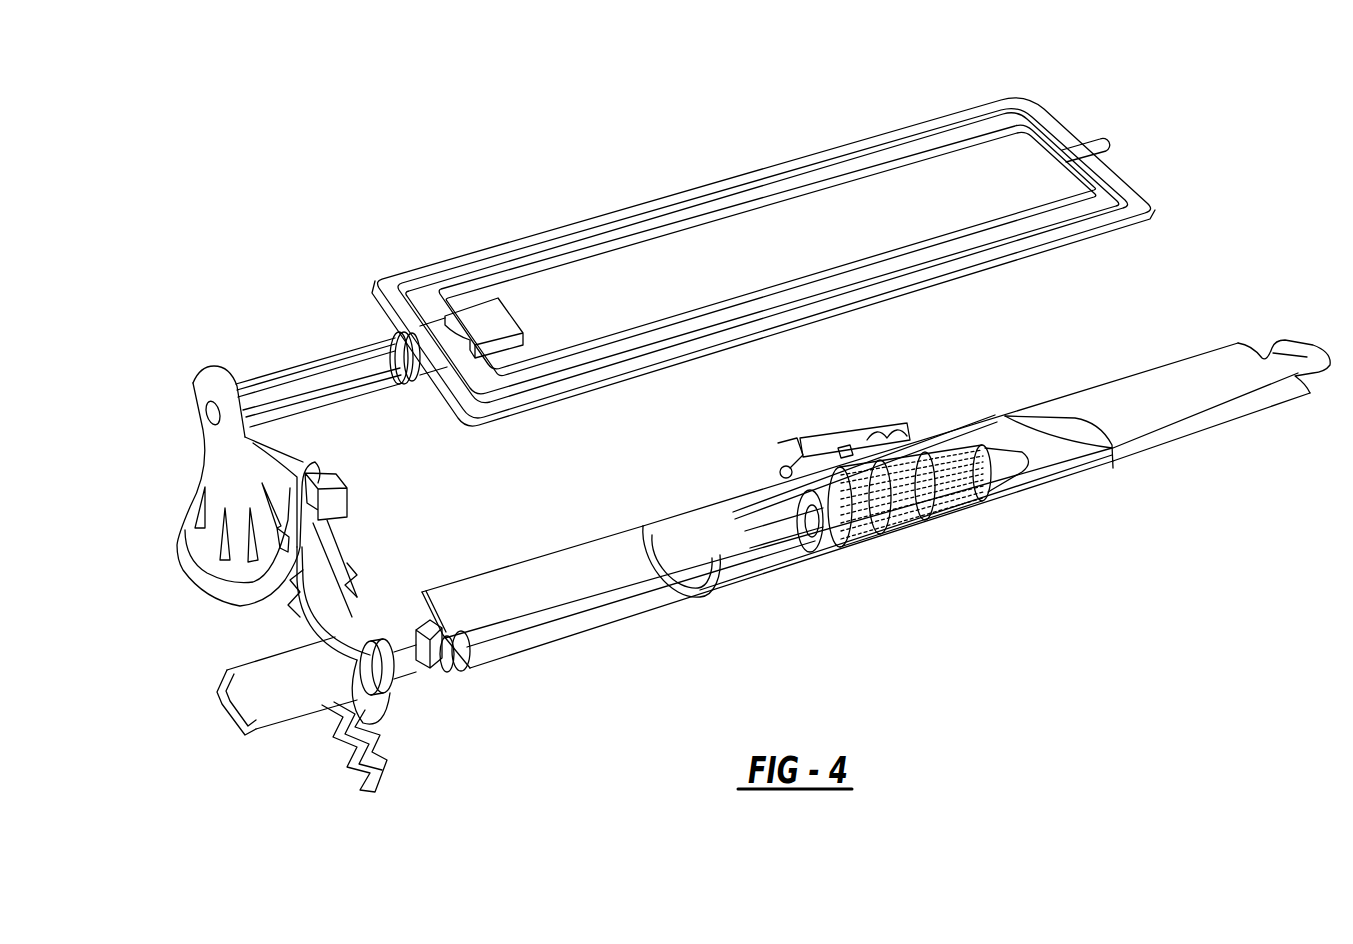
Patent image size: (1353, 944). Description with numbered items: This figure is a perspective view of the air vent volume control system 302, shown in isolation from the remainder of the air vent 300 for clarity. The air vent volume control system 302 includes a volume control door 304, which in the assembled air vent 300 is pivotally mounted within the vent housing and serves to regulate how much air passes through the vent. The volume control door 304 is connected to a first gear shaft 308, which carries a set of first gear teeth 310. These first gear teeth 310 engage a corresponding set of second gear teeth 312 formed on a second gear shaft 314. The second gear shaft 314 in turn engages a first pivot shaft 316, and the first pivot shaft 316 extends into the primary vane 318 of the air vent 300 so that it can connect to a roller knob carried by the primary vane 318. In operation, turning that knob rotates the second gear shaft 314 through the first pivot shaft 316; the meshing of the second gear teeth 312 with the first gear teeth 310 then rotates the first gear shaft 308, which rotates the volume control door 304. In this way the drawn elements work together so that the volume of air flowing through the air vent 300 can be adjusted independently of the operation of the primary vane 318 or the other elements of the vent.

The air vent 300 is at (972, 507).
The air vent volume control system 302 is at (1165, 108).
The volume control door 304 is at (732, 247).
The first gear shaft 308 is at (315, 375).
The set of first gear teeth 310 is at (235, 617).
The set of second gear teeth 312 is at (307, 755).
The second gear shaft 314 is at (218, 753).
The first pivot shaft 316 is at (543, 613).
The primary vane 318 is at (1190, 377).